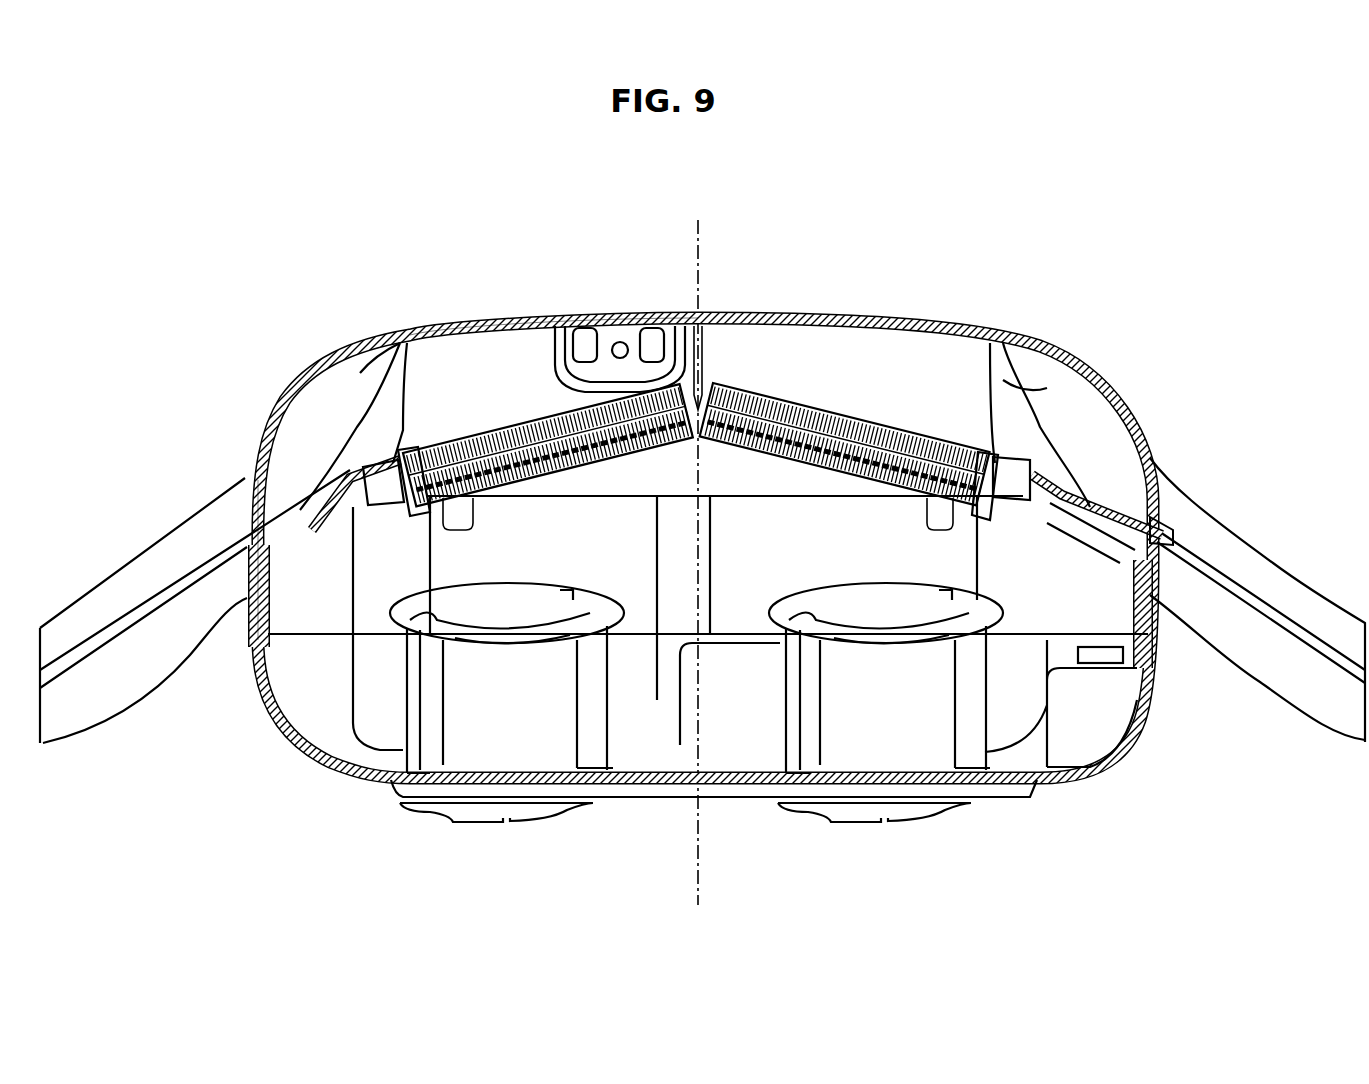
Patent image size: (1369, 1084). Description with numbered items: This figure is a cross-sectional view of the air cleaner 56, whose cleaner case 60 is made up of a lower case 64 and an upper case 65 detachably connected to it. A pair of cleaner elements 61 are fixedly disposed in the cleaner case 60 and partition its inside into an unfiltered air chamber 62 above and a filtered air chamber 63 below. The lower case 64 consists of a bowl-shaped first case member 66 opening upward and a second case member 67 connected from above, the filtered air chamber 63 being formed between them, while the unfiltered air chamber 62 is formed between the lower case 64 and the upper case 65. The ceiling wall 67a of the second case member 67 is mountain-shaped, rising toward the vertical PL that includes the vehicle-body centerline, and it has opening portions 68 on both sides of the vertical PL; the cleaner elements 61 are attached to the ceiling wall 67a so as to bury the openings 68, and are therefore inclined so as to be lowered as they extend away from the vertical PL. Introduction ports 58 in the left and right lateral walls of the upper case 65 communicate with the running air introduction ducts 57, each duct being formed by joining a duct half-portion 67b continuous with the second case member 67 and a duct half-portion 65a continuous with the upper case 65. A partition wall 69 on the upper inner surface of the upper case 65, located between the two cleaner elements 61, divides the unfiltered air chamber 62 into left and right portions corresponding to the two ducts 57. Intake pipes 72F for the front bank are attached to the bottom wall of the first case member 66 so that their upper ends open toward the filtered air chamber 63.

The air cleaner 56 is at (1097, 370).
The running air introduction duct 57 is at (702, 602).
The introduction port 58 is at (407, 343).
The cleaner case 60 is at (744, 798).
The cleaner element 61 is at (523, 427).
The unfiltered air chamber 62 is at (725, 427).
The filtered air chamber 63 is at (708, 631).
The lower case 64 is at (130, 838).
The upper case 65 is at (543, 325).
The duct half-portion 65a is at (105, 590).
The first case member 66 is at (280, 737).
The second case member 67 is at (180, 662).
The ceiling wall 67a is at (327, 517).
The duct half-portion 67b is at (155, 623).
The opening portion 68 is at (417, 453).
The partition wall 69 is at (713, 347).
The intake pipe 72F is at (515, 608).
The vertical PL is at (705, 727).